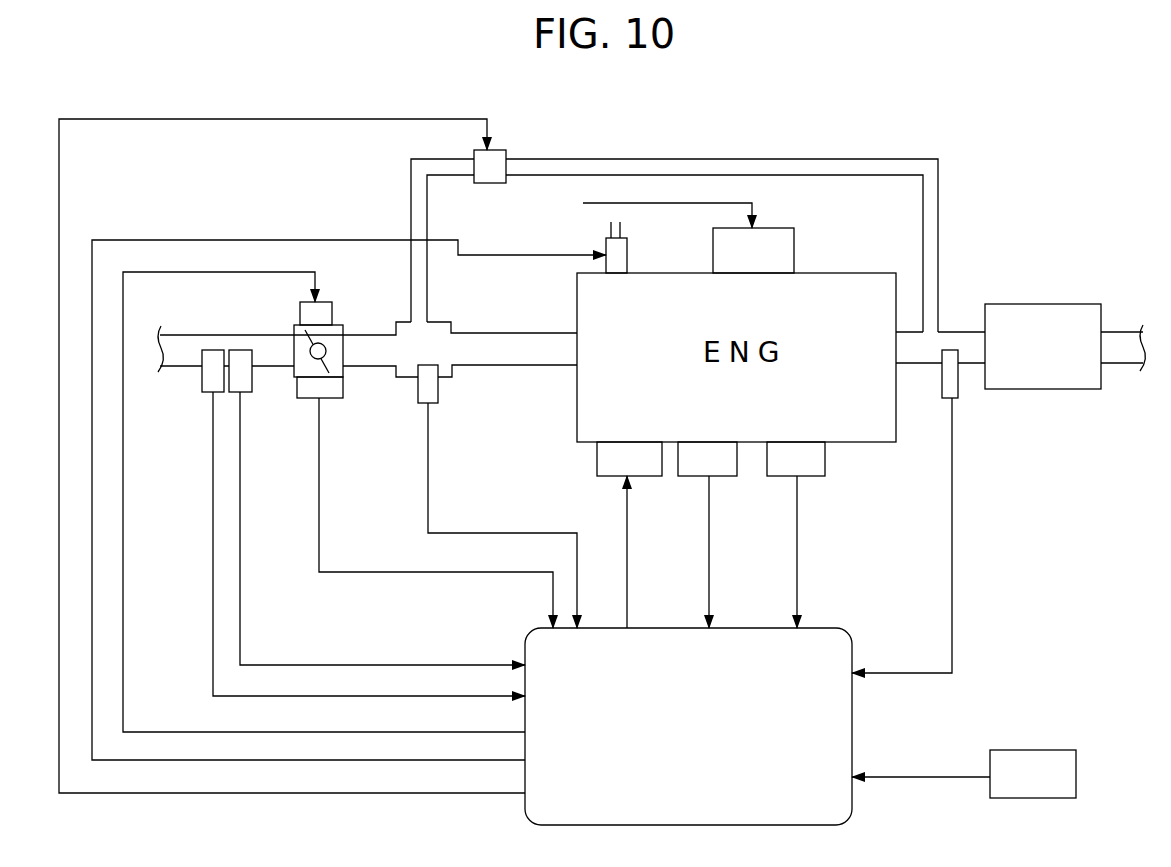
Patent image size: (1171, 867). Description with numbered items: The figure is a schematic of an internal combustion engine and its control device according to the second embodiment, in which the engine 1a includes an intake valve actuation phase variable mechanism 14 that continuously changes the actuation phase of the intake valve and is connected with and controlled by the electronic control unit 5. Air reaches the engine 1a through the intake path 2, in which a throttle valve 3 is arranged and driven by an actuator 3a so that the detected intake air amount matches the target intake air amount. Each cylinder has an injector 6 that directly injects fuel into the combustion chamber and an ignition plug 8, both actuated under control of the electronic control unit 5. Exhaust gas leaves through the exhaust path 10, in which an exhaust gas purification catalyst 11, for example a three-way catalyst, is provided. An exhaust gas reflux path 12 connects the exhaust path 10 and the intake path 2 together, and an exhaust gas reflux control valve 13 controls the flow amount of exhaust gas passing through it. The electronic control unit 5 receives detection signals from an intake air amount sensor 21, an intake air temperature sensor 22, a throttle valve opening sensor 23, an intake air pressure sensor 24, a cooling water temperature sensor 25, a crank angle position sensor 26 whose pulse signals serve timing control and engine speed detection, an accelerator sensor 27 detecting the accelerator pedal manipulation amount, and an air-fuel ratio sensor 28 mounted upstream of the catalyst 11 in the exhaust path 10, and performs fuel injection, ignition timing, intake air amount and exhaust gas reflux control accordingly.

The engine 1a is at (577, 297).
The intake path 2 is at (503, 367).
The throttle valve 3 is at (300, 333).
The actuator 3a is at (333, 313).
The electronic control unit 5 is at (760, 628).
The injector 6 is at (628, 252).
The ignition plug 8 is at (650, 477).
The exhaust path 10 is at (963, 332).
The exhaust gas purification catalyst 11 is at (1050, 304).
The exhaust gas reflux path 12 is at (643, 159).
The exhaust gas reflux control valve 13 is at (500, 150).
The intake valve actuation phase variable mechanism 14 is at (763, 227).
The intake air amount sensor 21 is at (207, 393).
The intake air temperature sensor 22 is at (242, 393).
The throttle valve opening sensor 23 is at (333, 398).
The intake air pressure sensor 24 is at (433, 407).
The cooling water temperature sensor 25 is at (725, 477).
The crank angle position sensor 26 is at (818, 478).
The accelerator sensor 27 is at (1038, 750).
The air-fuel ratio sensor 28 is at (952, 400).